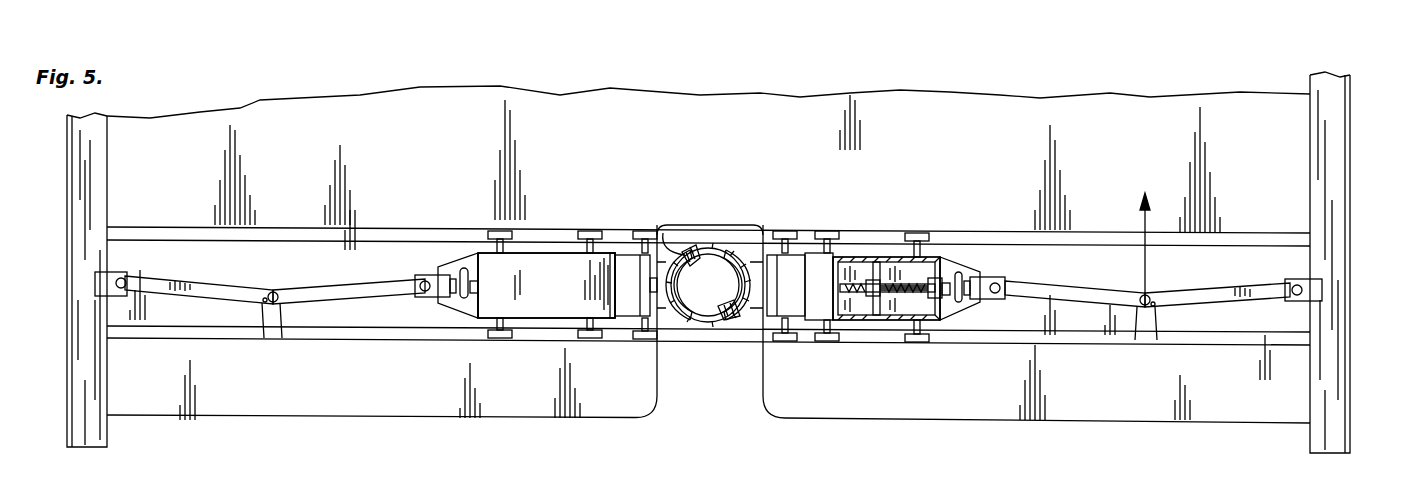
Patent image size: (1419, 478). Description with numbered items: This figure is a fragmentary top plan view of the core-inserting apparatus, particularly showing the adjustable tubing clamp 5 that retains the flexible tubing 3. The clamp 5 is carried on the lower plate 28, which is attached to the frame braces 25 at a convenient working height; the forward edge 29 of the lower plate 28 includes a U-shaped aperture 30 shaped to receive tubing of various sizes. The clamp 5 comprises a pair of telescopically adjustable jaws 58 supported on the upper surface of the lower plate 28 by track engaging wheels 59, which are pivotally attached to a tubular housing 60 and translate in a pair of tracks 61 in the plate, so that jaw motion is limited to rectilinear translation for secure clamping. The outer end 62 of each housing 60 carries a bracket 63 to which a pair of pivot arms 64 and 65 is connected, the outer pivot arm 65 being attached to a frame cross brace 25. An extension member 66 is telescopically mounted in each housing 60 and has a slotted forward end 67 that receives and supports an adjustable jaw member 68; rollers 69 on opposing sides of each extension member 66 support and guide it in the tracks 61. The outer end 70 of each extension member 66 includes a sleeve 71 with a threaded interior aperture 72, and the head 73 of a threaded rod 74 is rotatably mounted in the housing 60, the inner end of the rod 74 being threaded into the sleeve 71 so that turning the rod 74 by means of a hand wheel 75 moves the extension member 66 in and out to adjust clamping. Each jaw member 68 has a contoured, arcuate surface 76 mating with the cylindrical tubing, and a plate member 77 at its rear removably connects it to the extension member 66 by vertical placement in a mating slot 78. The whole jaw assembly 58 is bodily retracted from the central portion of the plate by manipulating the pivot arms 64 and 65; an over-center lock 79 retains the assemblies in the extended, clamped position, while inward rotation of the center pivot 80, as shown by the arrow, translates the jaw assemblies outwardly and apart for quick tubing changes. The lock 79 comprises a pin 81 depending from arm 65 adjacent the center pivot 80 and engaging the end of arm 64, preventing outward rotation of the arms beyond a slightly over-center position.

The flexible tubing 3 is at (709, 322).
The tubing clamp 5 is at (534, 264).
The frame braces 25 is at (67, 364).
The lower plate 28 is at (968, 422).
The forward edge 29 is at (403, 420).
The U-shaped aperture 30 is at (708, 227).
The telescopically adjustable jaws 58 is at (555, 310).
The track engaging wheels 59 is at (500, 230).
The tubular housing 60 is at (532, 252).
The tracks 61 is at (162, 328).
The outer end of housing 62 is at (465, 320).
The bracket 63 is at (455, 262).
The pivot arm 64 is at (347, 283).
The outer pivot arm 65 is at (195, 282).
The extension member 66 is at (626, 255).
The slotted forward end 67 is at (672, 258).
The jaw member 68 is at (735, 262).
The rollers 69 is at (645, 341).
The outer end of extension member 70 is at (888, 296).
The sleeve 71 is at (870, 285).
The threaded interior aperture 72 is at (870, 298).
The head of threaded rod 73 is at (950, 305).
The threaded rod 74 is at (906, 286).
The hand wheel 75 is at (458, 300).
The contoured surface 76 is at (695, 250).
The plate member 77 is at (650, 290).
The mating slot 78 is at (710, 285).
The over-center lock mechanism 79 is at (275, 292).
The center pivot 80 is at (282, 338).
The pin 81 is at (263, 338).